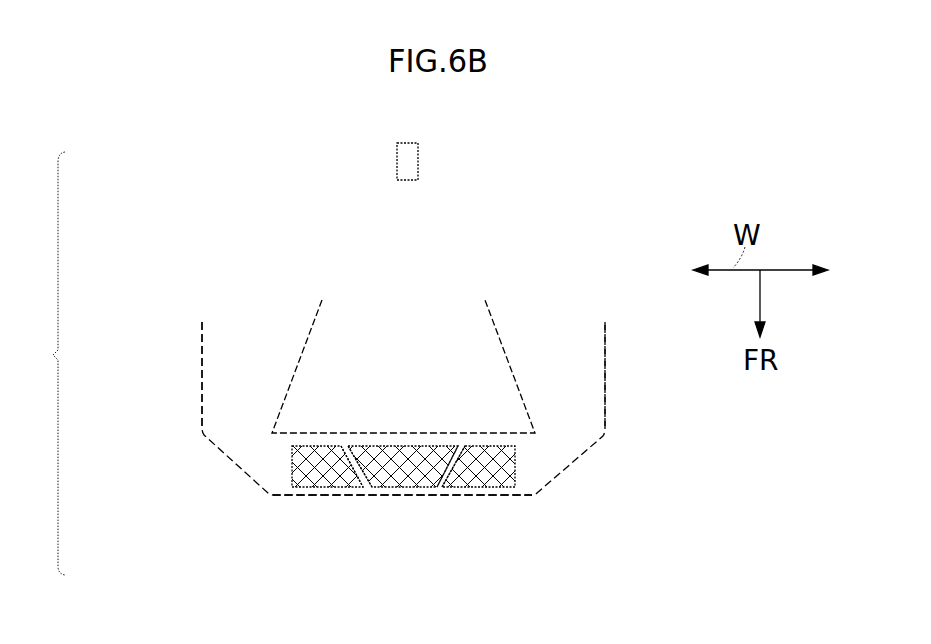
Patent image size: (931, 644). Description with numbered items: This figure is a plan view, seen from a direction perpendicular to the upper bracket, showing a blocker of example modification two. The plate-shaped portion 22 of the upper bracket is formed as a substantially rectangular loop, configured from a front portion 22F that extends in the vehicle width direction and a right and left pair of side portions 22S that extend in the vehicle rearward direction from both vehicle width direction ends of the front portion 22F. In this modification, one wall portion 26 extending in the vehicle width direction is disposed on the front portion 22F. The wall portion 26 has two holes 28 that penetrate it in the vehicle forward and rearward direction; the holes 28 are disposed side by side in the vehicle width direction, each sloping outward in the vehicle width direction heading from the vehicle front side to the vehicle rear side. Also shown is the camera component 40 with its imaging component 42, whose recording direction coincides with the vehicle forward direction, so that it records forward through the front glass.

The plate-shaped portion 22 is at (195, 420).
The side portions 22S is at (202, 363).
The front portion 22F is at (268, 496).
The wall portion 26 is at (497, 490).
The holes 28 is at (370, 488).
The imaging component 42 is at (463, 161).
The camera component 40 is at (418, 160).